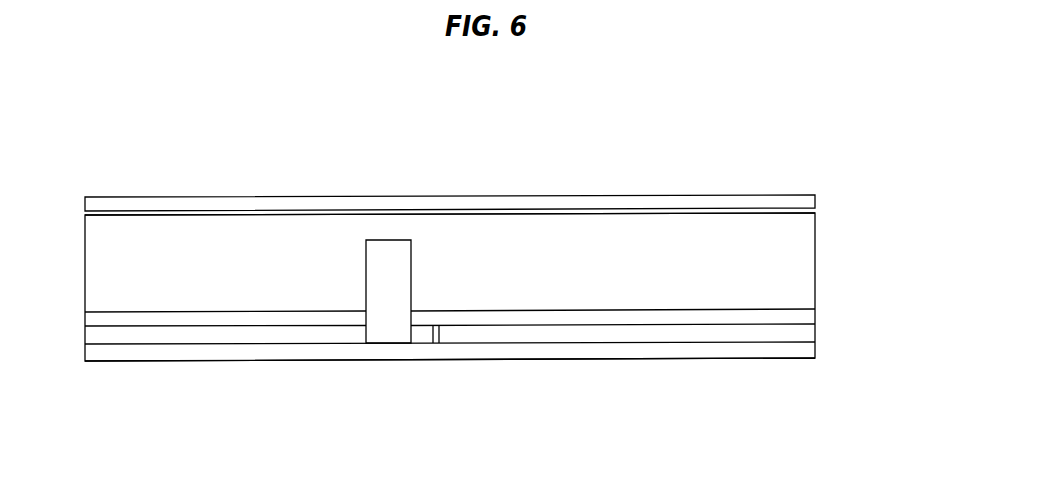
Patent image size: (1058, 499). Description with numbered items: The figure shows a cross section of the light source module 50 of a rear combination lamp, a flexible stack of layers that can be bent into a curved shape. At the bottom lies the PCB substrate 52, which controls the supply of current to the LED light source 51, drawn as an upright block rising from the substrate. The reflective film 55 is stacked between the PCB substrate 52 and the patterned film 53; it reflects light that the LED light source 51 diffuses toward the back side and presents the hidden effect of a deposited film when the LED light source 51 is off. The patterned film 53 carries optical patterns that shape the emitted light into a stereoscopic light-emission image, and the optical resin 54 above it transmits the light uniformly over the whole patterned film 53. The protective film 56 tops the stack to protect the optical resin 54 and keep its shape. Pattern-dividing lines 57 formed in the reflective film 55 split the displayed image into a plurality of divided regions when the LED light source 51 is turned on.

The light source module 50 is at (193, 191).
The LED light source 51 is at (389, 260).
The PCB substrate 52 is at (717, 348).
The patterned film 53 is at (752, 316).
The optical resin 54 is at (685, 245).
The reflective film 55 is at (638, 333).
The protective film 56 is at (511, 202).
The pattern-dividing lines 57 is at (441, 335).